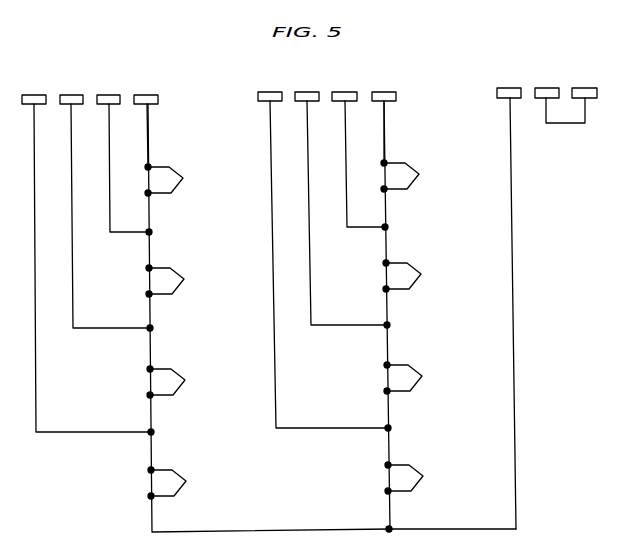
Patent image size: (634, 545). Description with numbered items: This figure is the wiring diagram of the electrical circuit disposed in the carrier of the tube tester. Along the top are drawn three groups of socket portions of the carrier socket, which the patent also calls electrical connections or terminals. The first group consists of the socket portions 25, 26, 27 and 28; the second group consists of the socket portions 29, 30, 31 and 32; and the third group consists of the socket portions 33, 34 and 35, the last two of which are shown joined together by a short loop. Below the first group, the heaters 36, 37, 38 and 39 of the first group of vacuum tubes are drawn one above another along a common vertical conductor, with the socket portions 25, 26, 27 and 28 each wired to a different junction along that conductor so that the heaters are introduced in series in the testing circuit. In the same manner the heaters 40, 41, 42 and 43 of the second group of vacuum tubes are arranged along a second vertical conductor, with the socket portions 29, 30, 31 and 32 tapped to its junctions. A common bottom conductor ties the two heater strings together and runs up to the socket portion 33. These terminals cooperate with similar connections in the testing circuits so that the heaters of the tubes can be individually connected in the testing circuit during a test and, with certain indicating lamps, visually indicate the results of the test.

The socket portion 25 is at (36, 95).
The socket portion 26 is at (68, 95).
The socket portion 27 is at (106, 95).
The socket portion 28 is at (147, 95).
The socket portion 29 is at (270, 92).
The socket portion 30 is at (307, 92).
The socket portion 31 is at (345, 92).
The socket portion 32 is at (384, 92).
The socket portion 33 is at (510, 88).
The socket portion 34 is at (547, 88).
The socket portion 35 is at (583, 88).
The heater 36 is at (182, 478).
The heater 37 is at (181, 377).
The heater 38 is at (180, 276).
The heater 39 is at (179, 175).
The heater 40 is at (419, 473).
The heater 41 is at (418, 373).
The heater 42 is at (417, 271).
The heater 43 is at (415, 171).